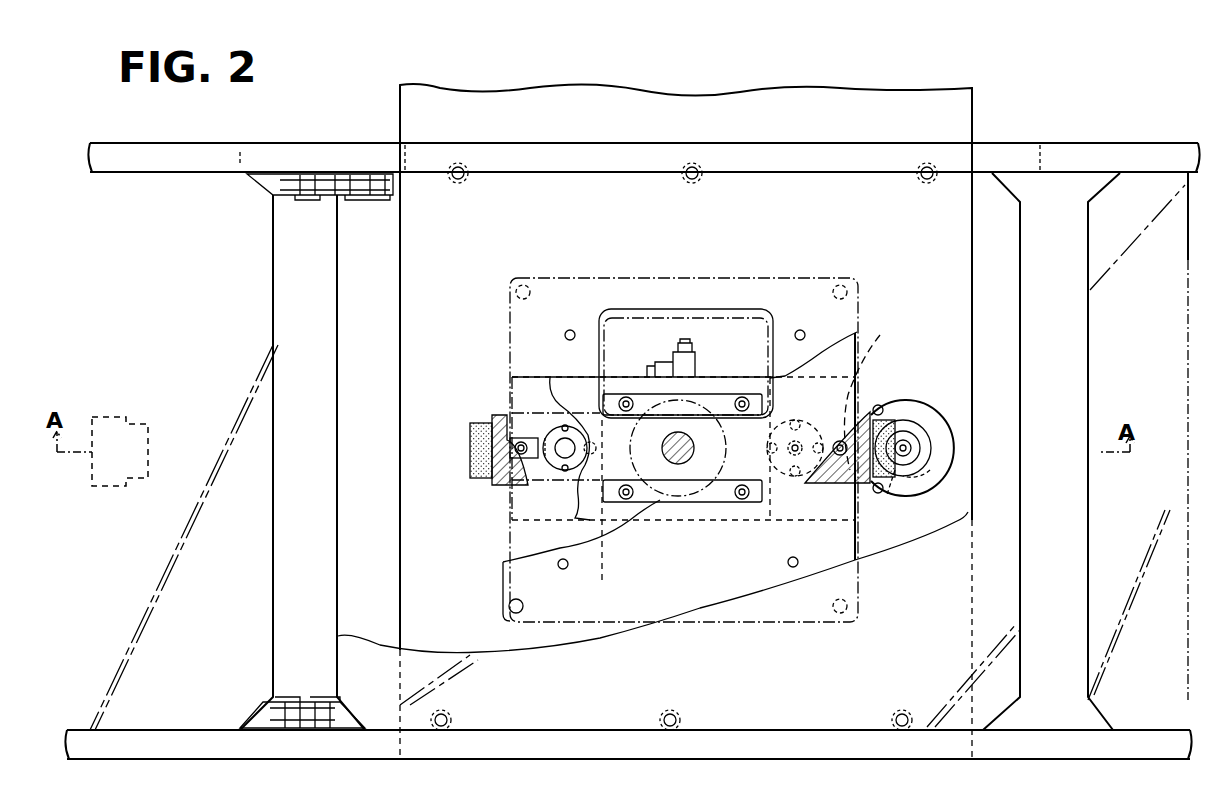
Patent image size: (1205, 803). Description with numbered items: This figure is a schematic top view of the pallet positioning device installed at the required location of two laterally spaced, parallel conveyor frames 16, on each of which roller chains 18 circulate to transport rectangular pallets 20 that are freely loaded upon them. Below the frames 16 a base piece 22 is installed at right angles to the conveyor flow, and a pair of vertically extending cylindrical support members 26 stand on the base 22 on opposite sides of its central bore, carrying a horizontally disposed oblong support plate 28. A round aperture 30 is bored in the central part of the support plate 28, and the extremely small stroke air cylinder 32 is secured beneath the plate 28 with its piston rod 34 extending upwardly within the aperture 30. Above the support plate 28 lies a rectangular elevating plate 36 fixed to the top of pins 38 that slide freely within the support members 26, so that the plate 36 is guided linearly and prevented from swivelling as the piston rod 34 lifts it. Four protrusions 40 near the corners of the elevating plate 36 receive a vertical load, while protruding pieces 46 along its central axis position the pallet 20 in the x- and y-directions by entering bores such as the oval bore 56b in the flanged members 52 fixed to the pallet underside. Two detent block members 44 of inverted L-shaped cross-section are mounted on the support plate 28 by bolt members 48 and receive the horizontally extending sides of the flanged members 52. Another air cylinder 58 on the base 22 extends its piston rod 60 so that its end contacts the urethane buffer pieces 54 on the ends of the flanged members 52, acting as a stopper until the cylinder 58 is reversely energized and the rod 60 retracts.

The conveyor frame 16 is at (274, 150).
The roller chain 18 is at (345, 186).
The pallet 20 is at (276, 332).
The base piece 22 is at (975, 125).
The cylindrical support member 26 is at (533, 390).
The support plate 28 is at (625, 310).
The round aperture 30 is at (705, 425).
The air cylinder 32 is at (653, 492).
The piston rod 34 is at (680, 468).
The elevating plate 36 is at (728, 278).
The pin 38 is at (565, 460).
The protrusion 40 is at (524, 284).
The detent block member 44 is at (752, 394).
The protruding piece 46 is at (862, 425).
The bolt member 48 is at (760, 500).
The flanged member 52 is at (495, 488).
The buffer piece 54 is at (478, 422).
The oval bore 56b is at (516, 430).
The air cylinder 58 is at (945, 480).
The piston rod 60 is at (912, 446).